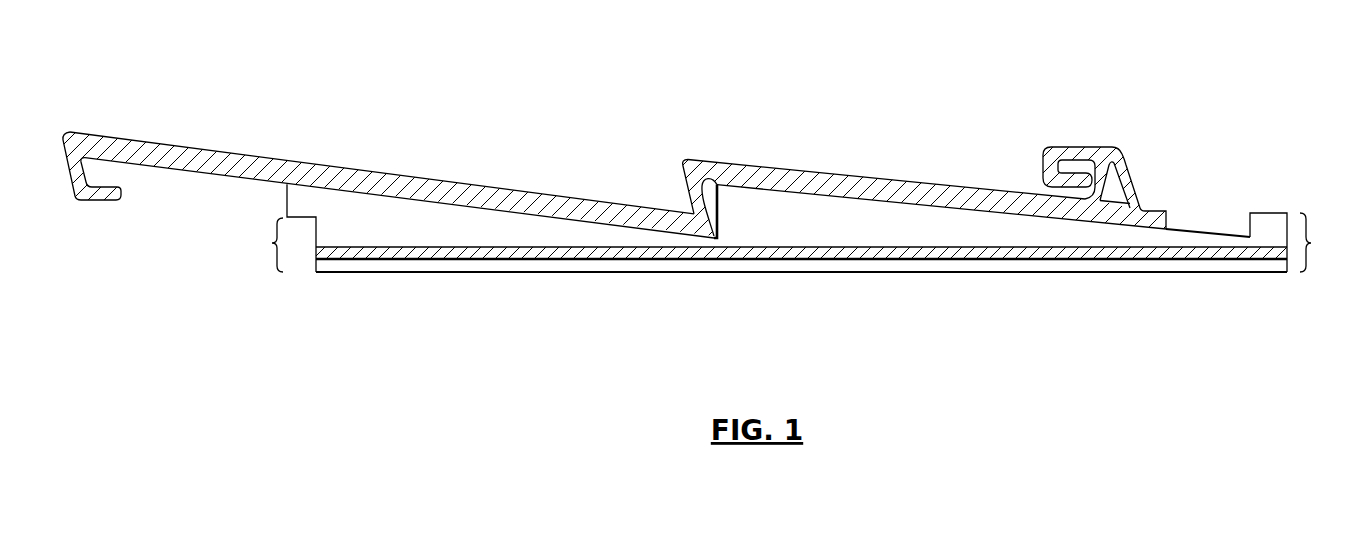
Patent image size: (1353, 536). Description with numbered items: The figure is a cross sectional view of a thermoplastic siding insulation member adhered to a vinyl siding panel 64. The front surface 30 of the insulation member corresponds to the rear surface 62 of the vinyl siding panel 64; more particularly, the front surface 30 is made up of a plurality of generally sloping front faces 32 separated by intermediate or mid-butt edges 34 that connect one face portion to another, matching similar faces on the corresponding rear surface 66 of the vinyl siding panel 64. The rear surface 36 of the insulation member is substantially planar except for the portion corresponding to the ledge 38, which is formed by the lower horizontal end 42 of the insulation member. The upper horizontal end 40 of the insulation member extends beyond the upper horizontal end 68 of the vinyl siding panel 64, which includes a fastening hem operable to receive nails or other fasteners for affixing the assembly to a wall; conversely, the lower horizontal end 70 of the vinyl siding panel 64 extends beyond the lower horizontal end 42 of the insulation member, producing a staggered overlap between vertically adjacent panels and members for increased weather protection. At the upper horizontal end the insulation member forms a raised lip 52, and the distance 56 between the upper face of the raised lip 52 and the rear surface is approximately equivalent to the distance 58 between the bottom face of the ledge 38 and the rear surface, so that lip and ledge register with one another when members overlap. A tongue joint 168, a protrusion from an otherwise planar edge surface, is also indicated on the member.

The front surface 30 is at (770, 168).
The front faces 32 is at (460, 184).
The mid-butt edges 34 is at (717, 160).
The rear surface 36 is at (735, 273).
The ledge 38 is at (282, 190).
The upper horizontal end 40 is at (1210, 229).
The lower horizontal end 42 is at (310, 164).
The raised lip 52 is at (1267, 223).
The distance 56 is at (1322, 242).
The distance 58 is at (262, 245).
The rear surface 62 is at (902, 203).
The vinyl siding panel 64 is at (1072, 147).
The rear surface 66 is at (497, 213).
The upper horizontal end 68 is at (1166, 211).
The lower horizontal end 70 is at (101, 131).
The tongue joint 168 is at (1168, 253).